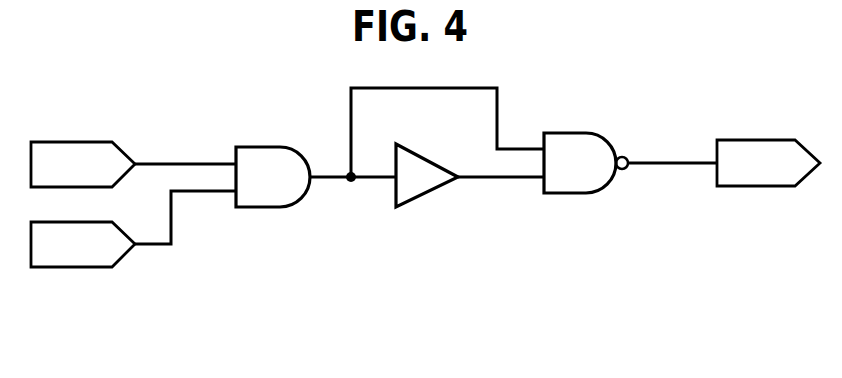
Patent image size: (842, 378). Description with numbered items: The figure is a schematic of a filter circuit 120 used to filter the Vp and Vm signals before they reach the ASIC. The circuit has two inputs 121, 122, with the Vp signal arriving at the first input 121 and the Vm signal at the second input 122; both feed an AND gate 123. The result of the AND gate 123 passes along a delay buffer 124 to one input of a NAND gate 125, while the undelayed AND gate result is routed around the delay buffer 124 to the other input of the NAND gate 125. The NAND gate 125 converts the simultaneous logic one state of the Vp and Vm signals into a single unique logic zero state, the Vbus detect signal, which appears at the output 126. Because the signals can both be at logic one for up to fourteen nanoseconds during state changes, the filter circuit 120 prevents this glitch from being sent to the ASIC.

The filter circuit 120 is at (512, 230).
The input 121 is at (83, 141).
The input 122 is at (78, 268).
The AND gate 123 is at (273, 208).
The delay buffer 124 is at (427, 152).
The NAND gate 125 is at (577, 133).
The output 126 is at (735, 140).